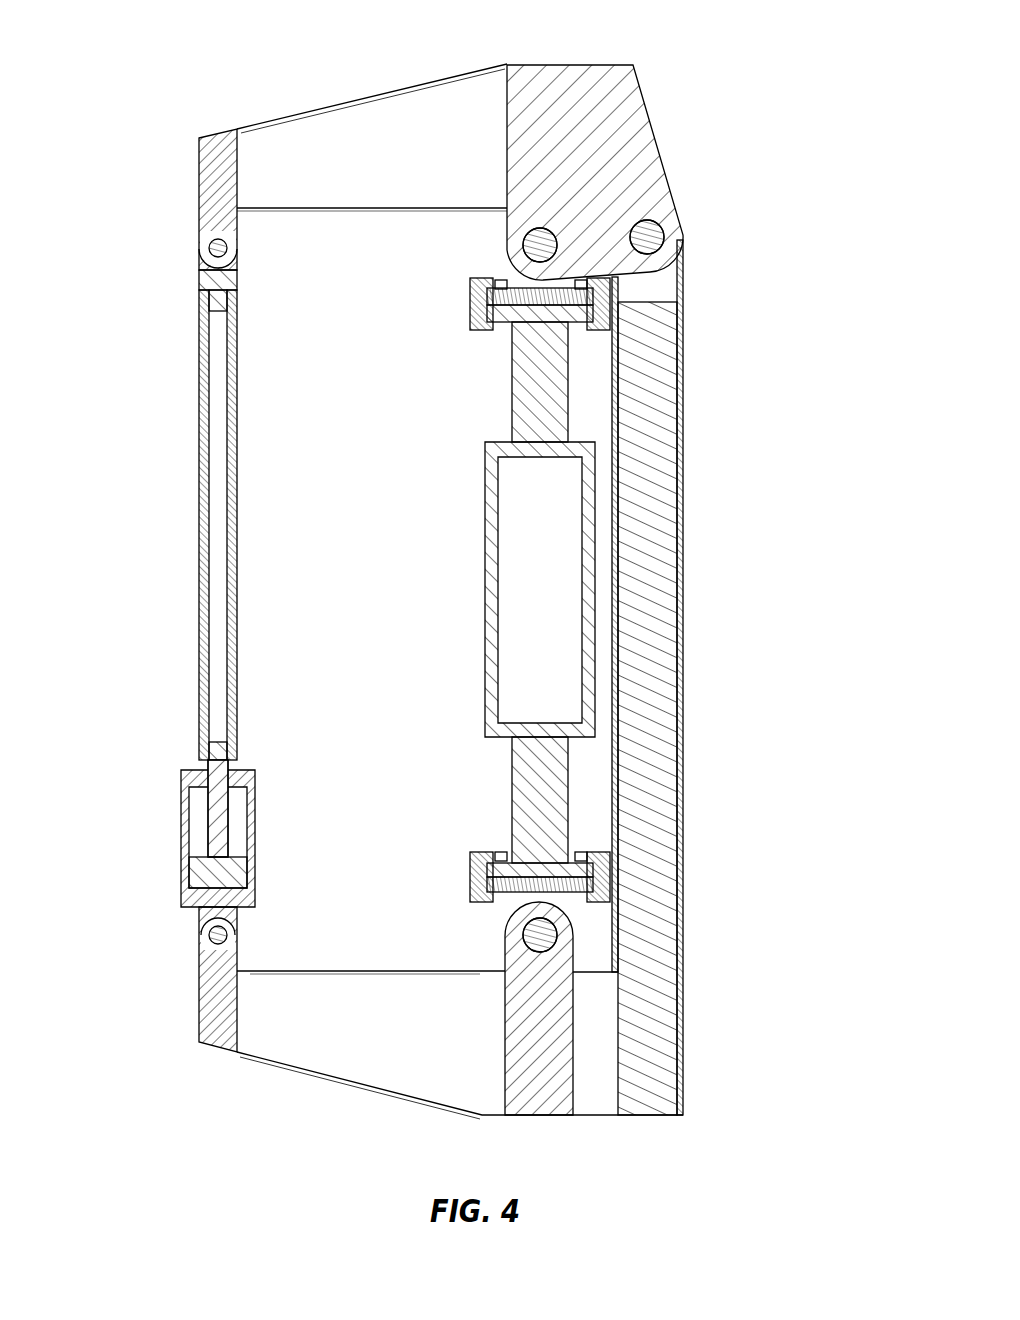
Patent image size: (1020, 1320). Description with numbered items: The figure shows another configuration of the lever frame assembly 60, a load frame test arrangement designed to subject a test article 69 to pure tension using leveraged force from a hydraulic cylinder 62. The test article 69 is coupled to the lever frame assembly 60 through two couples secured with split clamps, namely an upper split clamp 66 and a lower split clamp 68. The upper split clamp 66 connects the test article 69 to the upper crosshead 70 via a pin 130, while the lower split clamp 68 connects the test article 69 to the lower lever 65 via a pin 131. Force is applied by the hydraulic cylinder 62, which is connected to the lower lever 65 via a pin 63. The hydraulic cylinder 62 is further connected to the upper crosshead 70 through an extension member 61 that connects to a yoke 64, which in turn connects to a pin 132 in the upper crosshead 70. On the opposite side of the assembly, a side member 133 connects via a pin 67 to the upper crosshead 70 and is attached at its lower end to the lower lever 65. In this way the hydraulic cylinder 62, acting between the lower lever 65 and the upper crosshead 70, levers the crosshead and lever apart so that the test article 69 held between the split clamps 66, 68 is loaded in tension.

The lever frame assembly 60 is at (224, 58).
The extension member 61 is at (203, 521).
The hydraulic cylinder 62 is at (183, 836).
The pin 63 is at (212, 940).
The yoke 64 is at (211, 289).
The lower lever 65 is at (385, 1045).
The upper split clamp 66 is at (598, 298).
The pin 67 is at (652, 240).
The lower split clamp 68 is at (598, 880).
The test article 69 is at (595, 637).
The upper crosshead 70 is at (640, 143).
The pin 130 is at (537, 246).
The pin 131 is at (538, 936).
The pin 132 is at (212, 244).
The side member 133 is at (647, 507).